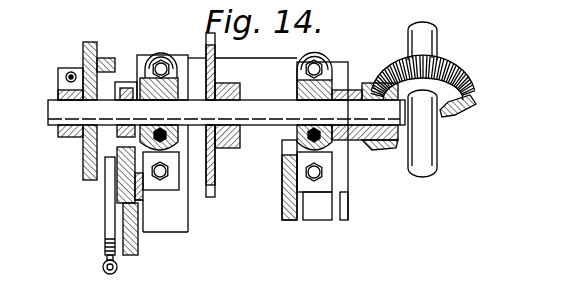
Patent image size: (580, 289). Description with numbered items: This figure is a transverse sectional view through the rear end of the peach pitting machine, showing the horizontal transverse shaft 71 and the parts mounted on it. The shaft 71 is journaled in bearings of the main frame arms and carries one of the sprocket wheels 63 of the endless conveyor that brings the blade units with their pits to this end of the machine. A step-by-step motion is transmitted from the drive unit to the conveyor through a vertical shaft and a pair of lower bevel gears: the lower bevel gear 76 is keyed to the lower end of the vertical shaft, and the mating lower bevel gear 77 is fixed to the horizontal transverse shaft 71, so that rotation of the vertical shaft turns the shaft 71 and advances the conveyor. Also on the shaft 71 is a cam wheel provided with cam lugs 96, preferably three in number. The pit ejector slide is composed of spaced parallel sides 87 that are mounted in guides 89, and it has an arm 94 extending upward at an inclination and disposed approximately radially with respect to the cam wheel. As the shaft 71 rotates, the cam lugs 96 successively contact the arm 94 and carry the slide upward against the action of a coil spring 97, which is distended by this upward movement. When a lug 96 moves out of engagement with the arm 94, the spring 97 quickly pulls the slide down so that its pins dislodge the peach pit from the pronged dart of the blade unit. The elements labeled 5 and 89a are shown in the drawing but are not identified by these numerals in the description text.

The shaft 5 is at (482, 8).
The sprocket wheel 63 is at (215, 157).
The horizontal transverse shaft 71 is at (241, 134).
The lower bevel gear 76 is at (478, 92).
The lower bevel gear 77 is at (377, 141).
The side 87 is at (118, 185).
The guide 89 is at (140, 214).
The bracket 89a is at (282, 187).
The arm 94 is at (104, 197).
The cam lug 96 is at (113, 56).
The coil spring 97 is at (103, 268).